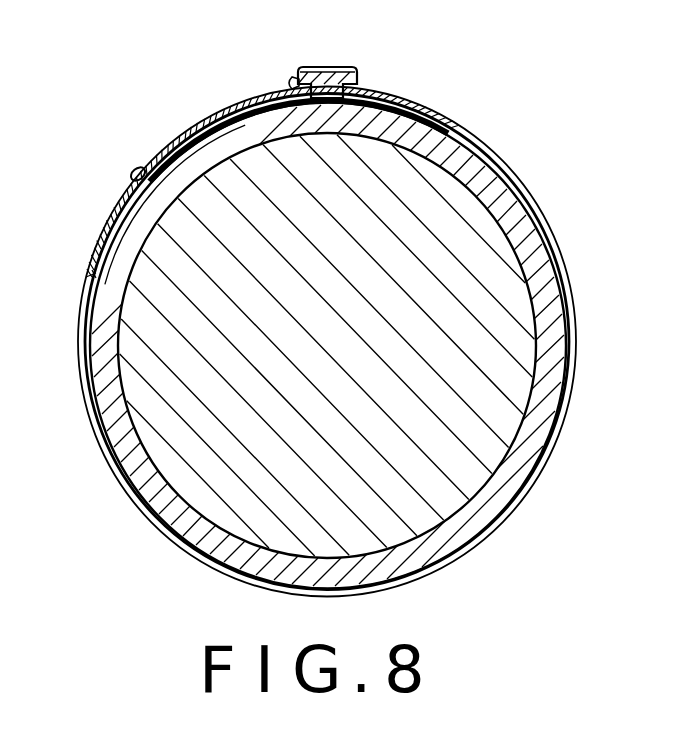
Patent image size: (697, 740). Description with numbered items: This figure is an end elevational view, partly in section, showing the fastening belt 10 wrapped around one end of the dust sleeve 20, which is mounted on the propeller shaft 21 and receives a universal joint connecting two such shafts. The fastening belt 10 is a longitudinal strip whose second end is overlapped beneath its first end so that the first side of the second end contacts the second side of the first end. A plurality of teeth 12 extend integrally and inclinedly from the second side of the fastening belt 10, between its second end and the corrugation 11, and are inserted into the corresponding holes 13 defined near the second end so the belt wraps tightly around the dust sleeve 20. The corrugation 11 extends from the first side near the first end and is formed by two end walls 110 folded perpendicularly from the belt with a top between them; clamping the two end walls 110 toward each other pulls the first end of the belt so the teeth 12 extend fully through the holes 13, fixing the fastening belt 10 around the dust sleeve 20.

The fastening belt 10 is at (548, 166).
The corrugation 11 is at (354, 69).
The end walls 110 is at (292, 79).
The teeth 12 is at (261, 101).
The holes 13 is at (140, 170).
The dust sleeve 20 is at (556, 389).
The propeller shaft 21 is at (488, 440).